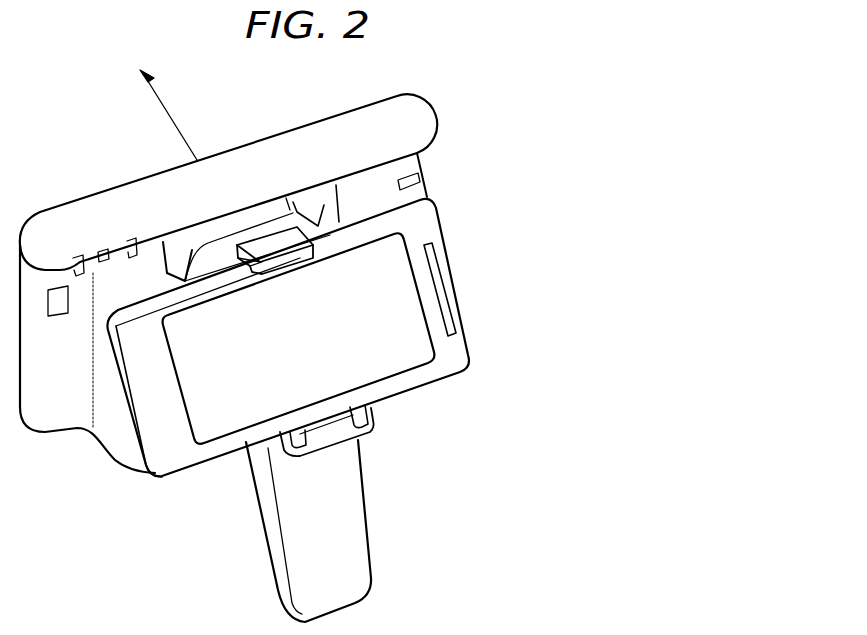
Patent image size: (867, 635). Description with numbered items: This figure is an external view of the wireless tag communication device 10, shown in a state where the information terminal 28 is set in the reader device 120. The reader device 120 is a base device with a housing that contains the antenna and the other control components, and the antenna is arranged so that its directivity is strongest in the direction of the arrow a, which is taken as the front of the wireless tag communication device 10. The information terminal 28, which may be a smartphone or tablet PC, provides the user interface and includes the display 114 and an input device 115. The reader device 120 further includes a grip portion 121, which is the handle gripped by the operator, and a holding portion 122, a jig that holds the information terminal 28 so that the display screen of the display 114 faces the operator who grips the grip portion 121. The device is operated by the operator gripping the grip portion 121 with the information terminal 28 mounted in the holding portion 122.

The wireless tag communication device 10 is at (497, 140).
The reader device 120 is at (248, 160).
The information terminal 28 is at (443, 255).
The display 114 is at (398, 343).
The input device 115 is at (299, 338).
The holding portion 122 is at (283, 262).
The grip portion 121 is at (352, 511).